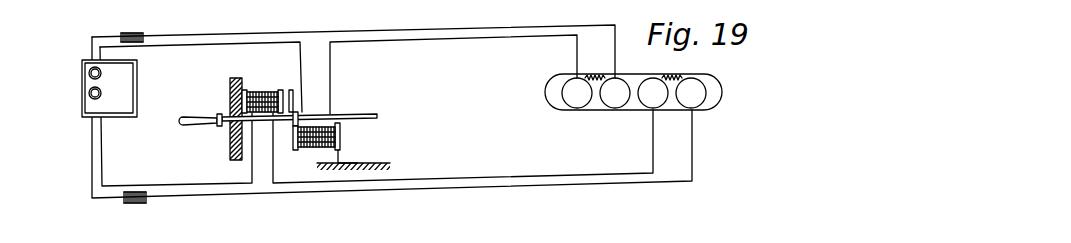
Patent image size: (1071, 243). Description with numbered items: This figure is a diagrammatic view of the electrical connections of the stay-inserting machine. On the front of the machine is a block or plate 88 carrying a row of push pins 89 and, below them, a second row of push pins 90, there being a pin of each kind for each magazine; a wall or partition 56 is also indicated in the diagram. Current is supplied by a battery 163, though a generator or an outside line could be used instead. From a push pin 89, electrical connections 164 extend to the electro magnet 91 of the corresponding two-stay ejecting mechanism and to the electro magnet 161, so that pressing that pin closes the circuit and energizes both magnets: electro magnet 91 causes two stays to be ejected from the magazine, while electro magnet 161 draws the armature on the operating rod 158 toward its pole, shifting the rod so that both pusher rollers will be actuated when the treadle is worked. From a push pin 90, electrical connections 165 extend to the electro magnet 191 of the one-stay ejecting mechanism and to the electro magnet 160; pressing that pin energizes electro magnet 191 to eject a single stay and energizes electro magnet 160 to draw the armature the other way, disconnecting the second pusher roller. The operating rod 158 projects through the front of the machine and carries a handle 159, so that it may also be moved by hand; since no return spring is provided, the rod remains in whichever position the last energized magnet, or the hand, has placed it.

The wall / partition 56 is at (230, 92).
The block or plate 88 is at (84, 102).
The push pins 89 is at (89, 74).
The push pins 90 is at (89, 93).
The electro magnet 91 is at (614, 103).
The operating rod 158 is at (360, 114).
The handle 159 is at (178, 118).
The electro magnet 160 is at (260, 90).
The electro magnet 161 is at (313, 152).
The battery 163 is at (136, 33).
The electrical connections 164 is at (297, 41).
The electrical connections 165 is at (237, 185).
The electro magnet 191 is at (658, 99).